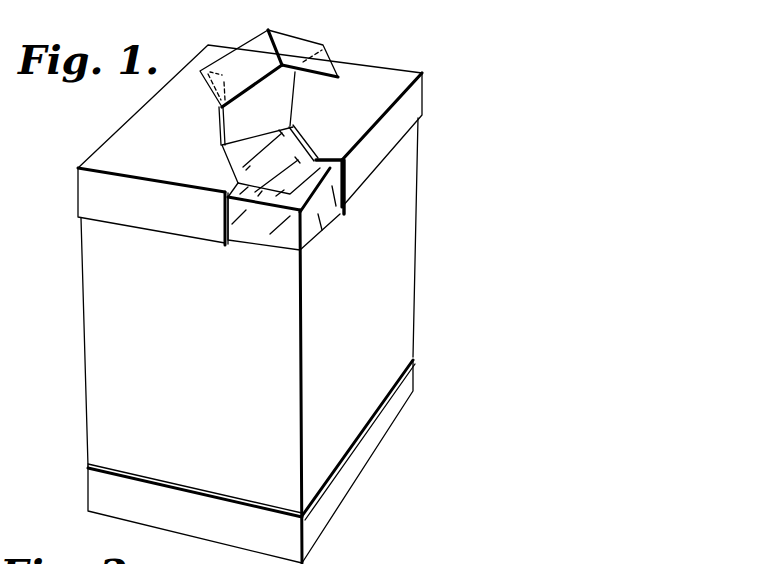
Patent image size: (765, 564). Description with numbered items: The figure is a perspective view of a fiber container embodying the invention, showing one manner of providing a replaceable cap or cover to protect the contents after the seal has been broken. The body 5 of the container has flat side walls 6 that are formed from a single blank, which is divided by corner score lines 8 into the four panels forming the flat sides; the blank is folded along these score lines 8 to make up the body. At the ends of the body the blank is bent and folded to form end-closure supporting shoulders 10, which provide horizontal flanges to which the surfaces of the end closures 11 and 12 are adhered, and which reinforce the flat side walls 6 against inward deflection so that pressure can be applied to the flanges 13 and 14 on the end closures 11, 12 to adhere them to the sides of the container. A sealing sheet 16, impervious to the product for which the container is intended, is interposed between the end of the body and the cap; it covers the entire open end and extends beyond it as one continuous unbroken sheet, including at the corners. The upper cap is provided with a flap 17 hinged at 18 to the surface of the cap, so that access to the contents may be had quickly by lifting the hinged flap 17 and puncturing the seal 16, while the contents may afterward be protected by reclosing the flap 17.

The body of a container 5 is at (430, 157).
The side walls 6 is at (119, 376).
The score lines 8 is at (213, 155).
The end-closure supporting shoulders 10 is at (328, 161).
The end closure 11 is at (399, 74).
The end closure 12 is at (358, 454).
The flange 13 is at (360, 163).
The flange 14 is at (392, 398).
The sealing sheet 16 is at (289, 149).
The flap 17 is at (292, 46).
The hinge 18 is at (217, 133).